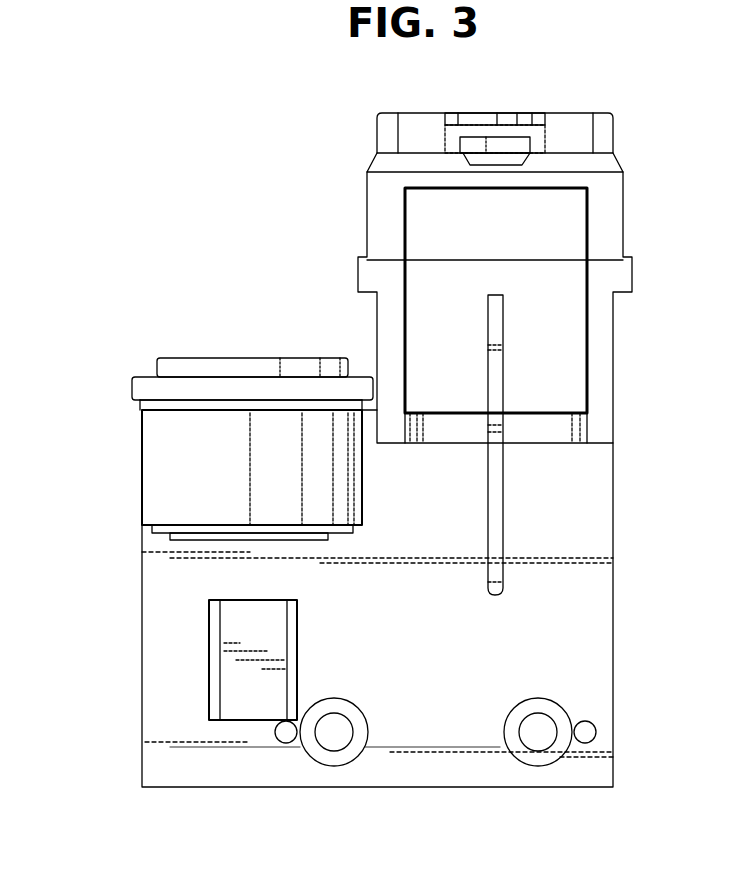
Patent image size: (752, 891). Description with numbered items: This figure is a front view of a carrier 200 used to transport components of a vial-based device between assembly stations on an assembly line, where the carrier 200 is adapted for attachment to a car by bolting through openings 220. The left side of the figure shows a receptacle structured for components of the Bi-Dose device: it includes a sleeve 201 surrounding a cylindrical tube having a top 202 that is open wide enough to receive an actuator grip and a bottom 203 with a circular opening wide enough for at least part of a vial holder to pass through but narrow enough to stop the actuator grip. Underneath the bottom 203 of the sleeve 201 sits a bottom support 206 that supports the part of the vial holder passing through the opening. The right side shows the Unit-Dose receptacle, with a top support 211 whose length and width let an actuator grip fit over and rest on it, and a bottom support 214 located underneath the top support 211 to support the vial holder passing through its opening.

The carrier 200 is at (226, 222).
The sleeve 201 is at (168, 460).
The top 202 is at (193, 358).
The bottom 203 is at (187, 542).
The bottom support 206 is at (208, 653).
The top support 211 is at (562, 112).
The bottom support 214 is at (503, 313).
The openings 220 is at (347, 748).